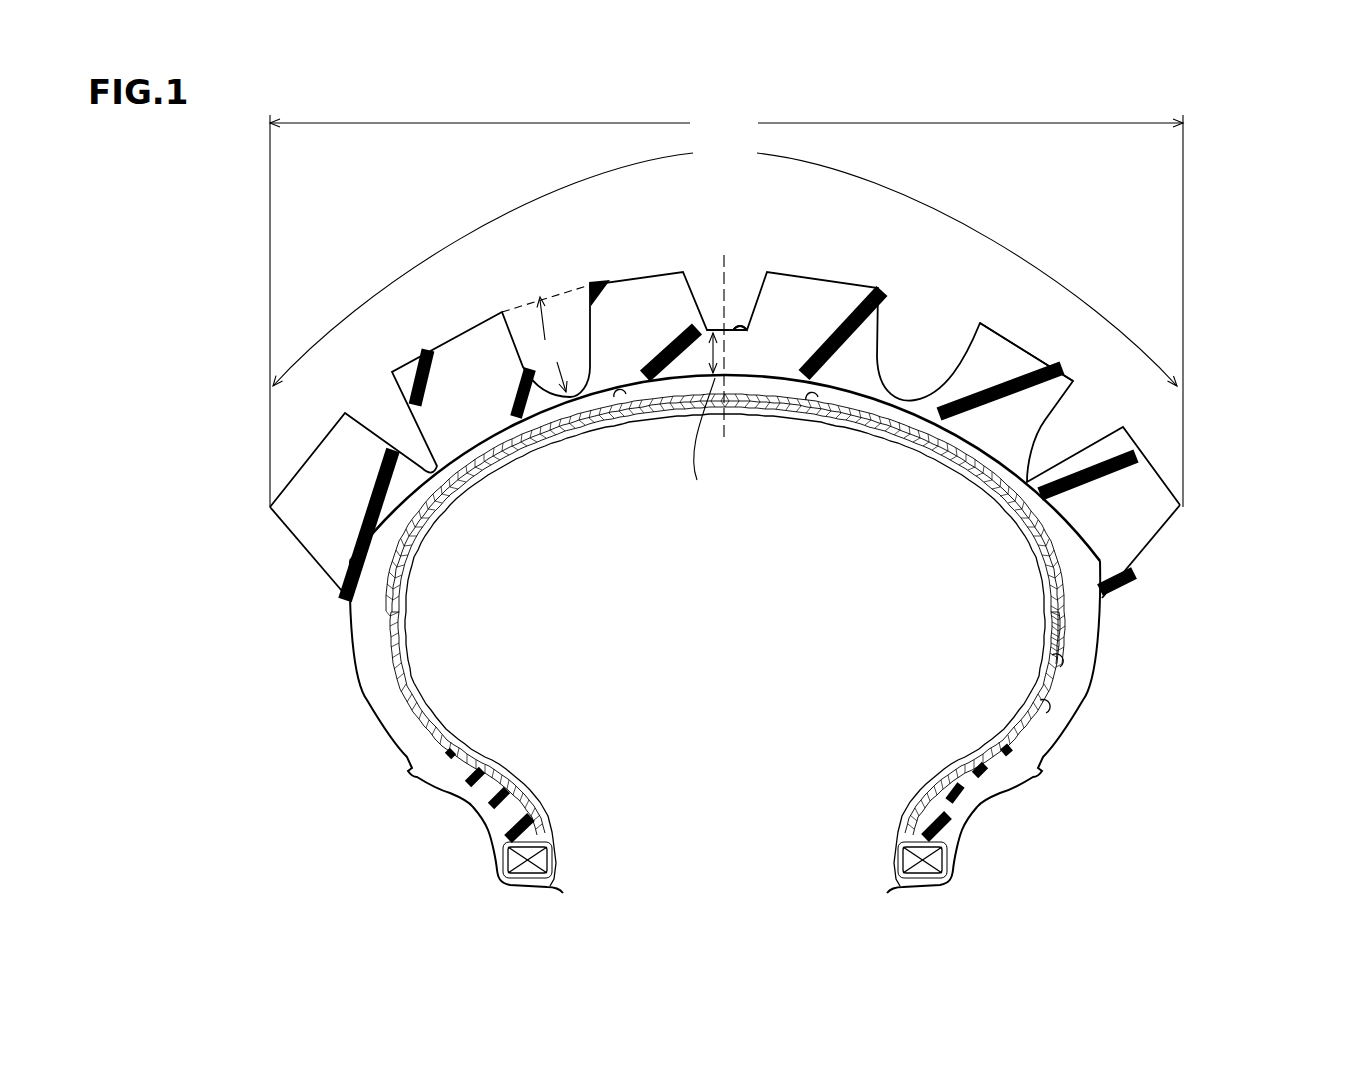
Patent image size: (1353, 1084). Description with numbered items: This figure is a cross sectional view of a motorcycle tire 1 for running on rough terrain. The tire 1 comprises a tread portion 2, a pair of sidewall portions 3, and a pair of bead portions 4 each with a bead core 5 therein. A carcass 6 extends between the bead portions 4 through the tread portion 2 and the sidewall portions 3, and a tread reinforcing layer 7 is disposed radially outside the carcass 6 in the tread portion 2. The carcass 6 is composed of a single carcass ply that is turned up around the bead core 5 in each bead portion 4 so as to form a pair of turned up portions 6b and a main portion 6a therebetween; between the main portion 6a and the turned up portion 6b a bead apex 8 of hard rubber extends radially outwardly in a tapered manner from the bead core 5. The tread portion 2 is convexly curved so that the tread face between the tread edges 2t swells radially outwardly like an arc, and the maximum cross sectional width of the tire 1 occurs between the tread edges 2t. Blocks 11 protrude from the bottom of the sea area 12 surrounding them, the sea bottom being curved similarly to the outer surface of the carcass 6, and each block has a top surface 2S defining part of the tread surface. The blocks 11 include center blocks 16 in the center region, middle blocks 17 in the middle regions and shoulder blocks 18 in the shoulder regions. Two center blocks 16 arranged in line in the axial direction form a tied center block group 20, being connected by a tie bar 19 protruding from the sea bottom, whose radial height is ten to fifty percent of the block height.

The motorcycle tire 1 is at (1209, 228).
The tread portion 2 is at (714, 392).
The tread edges 2t is at (270, 507).
The tread surface (11v) 2S is at (984, 330).
The sidewall portions 3 is at (345, 670).
The bead portions 4 is at (724, 812).
The bead core 5 is at (508, 852).
The carcass 6 is at (726, 621).
The main portion 6a is at (1058, 660).
The turned up portions 6b is at (1046, 704).
The tread reinforcing layer 7 is at (810, 396).
The bead apex 8 is at (507, 812).
The blocks 11 is at (705, 392).
The sea area 12 is at (620, 392).
The center blocks 16 is at (627, 276).
The middle blocks 17 is at (417, 350).
The shoulder blocks 18 is at (731, 494).
The tie bar 19 is at (746, 334).
The tied center block groups 20 is at (747, 290).